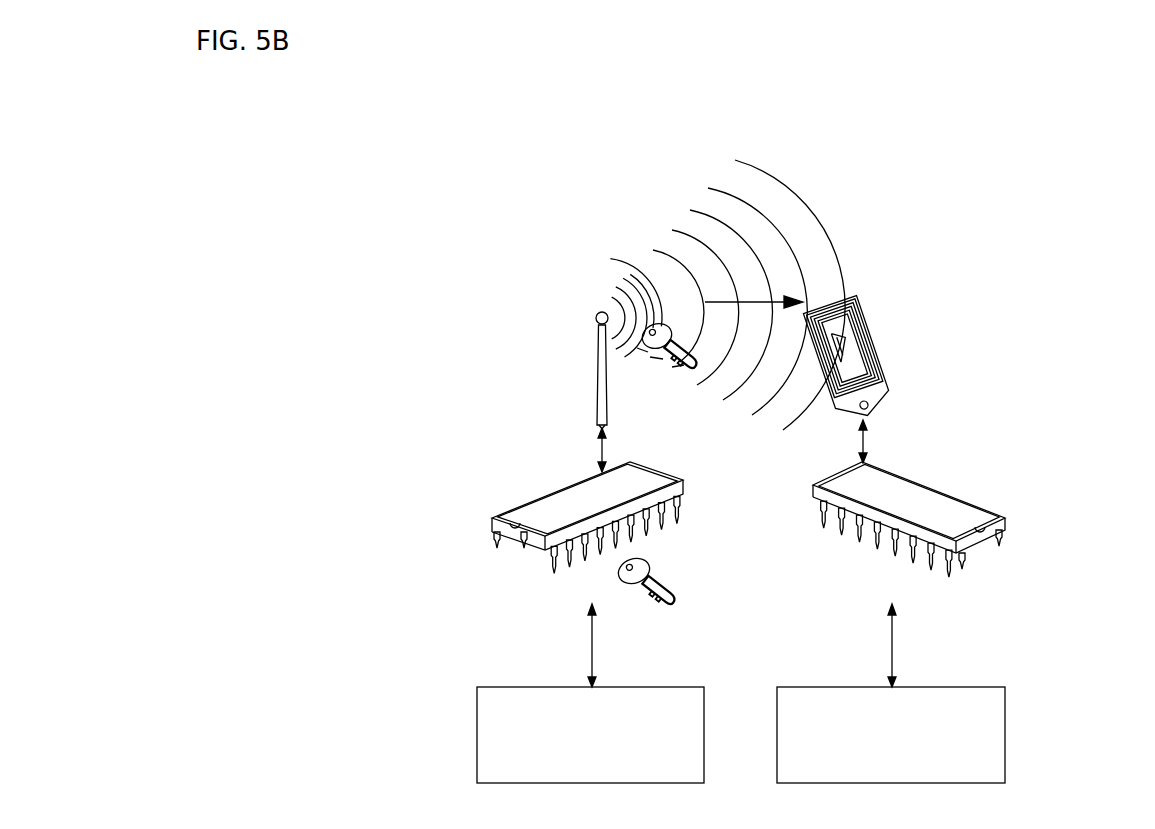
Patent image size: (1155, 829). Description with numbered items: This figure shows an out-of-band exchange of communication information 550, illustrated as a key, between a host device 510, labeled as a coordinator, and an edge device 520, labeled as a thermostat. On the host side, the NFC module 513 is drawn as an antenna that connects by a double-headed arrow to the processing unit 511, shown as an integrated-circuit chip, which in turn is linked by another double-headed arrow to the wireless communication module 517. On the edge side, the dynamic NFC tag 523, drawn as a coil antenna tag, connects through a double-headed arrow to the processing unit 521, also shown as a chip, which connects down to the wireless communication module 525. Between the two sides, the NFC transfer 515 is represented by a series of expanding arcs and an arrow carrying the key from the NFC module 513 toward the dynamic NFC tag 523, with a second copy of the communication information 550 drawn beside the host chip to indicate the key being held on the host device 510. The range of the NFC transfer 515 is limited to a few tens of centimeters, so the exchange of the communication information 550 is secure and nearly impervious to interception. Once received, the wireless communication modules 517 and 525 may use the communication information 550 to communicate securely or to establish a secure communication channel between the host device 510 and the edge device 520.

The host device 510 is at (514, 182).
The processing unit 511 is at (497, 512).
The NFC module 513 is at (597, 372).
The NFC transfer 515 is at (636, 260).
The wireless communication module 517 is at (510, 687).
The edge device 520 is at (1051, 180).
The processing unit 521 is at (963, 498).
The dynamic NFC tag 523 is at (875, 334).
The wireless communication module 525 is at (1008, 749).
The communication information 550 is at (641, 292).